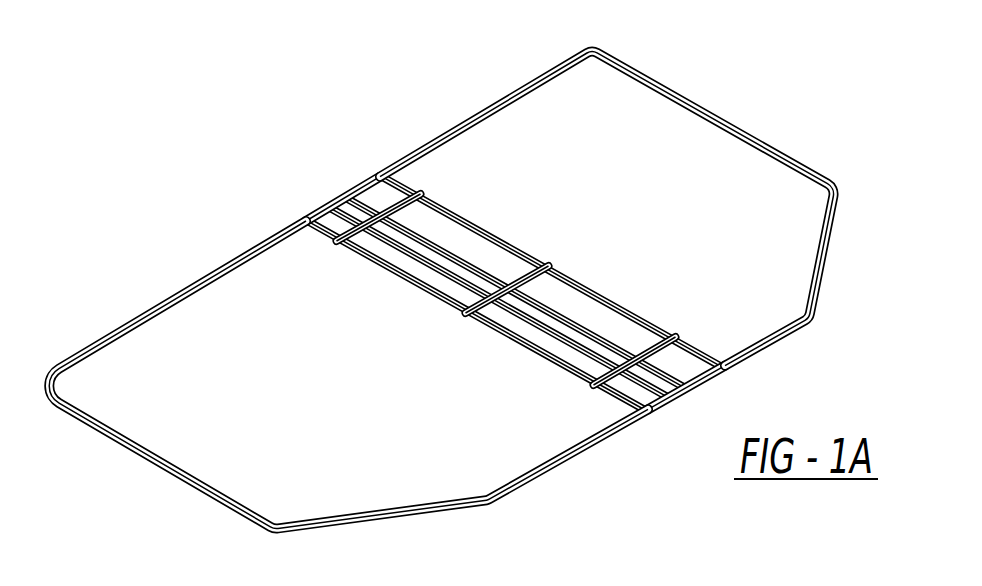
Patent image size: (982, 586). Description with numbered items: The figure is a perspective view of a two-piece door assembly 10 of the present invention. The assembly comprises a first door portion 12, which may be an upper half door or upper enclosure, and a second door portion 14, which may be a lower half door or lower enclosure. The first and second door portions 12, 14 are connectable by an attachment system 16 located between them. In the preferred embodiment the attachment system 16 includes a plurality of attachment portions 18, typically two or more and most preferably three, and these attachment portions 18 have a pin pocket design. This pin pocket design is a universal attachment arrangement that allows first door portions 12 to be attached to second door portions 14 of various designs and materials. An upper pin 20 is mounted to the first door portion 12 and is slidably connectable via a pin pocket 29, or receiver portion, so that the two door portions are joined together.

The two-piece door assembly 10 is at (441, 271).
The first door portion 12 is at (722, 88).
The second door portion 14 is at (143, 284).
The attachment system 16 is at (476, 249).
The attachment portions 18 is at (424, 191).
The upper pin 20 is at (541, 271).
The pin pocket 29 is at (335, 216).